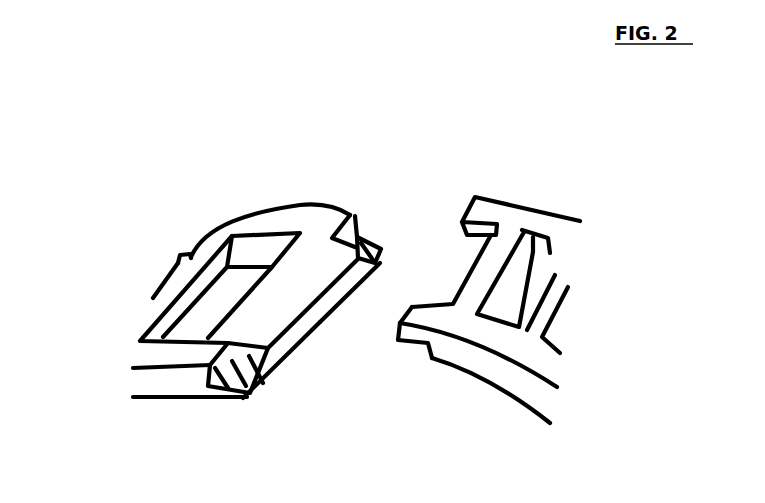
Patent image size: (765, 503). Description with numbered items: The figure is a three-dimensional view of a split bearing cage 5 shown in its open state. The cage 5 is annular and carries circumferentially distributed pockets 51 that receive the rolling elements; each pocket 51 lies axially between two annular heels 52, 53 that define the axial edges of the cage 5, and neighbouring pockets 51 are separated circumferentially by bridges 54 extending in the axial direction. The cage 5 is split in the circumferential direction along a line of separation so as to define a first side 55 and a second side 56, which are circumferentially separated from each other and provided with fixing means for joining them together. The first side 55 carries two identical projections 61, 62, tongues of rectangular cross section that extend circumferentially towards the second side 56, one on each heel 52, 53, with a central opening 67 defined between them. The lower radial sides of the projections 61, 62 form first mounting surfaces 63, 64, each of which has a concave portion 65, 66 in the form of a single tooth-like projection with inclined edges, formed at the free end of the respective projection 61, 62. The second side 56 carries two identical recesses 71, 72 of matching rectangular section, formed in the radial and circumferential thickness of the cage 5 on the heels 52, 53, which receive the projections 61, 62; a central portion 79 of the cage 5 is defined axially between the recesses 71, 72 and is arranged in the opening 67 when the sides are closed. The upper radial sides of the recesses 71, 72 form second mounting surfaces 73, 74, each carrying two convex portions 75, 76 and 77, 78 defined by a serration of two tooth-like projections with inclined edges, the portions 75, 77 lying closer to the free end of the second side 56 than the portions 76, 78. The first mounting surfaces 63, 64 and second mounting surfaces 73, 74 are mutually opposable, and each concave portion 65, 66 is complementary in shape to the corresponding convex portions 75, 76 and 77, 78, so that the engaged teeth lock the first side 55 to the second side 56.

The cage 5 is at (588, 335).
The pocket 51 is at (152, 298).
The annular heel 52 is at (237, 214).
The annular heel 53 is at (145, 375).
The bridge 54 is at (165, 283).
The first side 55 is at (432, 282).
The second side 56 is at (325, 324).
The projection 61 is at (491, 198).
The projection 62 is at (436, 320).
The first mounting surface 63 is at (540, 250).
The first mounting surface 64 is at (413, 348).
The concave portion 65 is at (464, 237).
The concave portion 66 is at (400, 338).
The central opening 67 is at (490, 258).
The recess 71 is at (352, 230).
The recess 72 is at (281, 324).
The second mounting surface 73 is at (338, 232).
The second mounting surface 74 is at (208, 398).
The convex portion 75 is at (379, 242).
The convex portion 76 is at (364, 238).
The convex portion 77 is at (233, 402).
The convex portion 78 is at (205, 372).
The central portion 79 is at (336, 336).